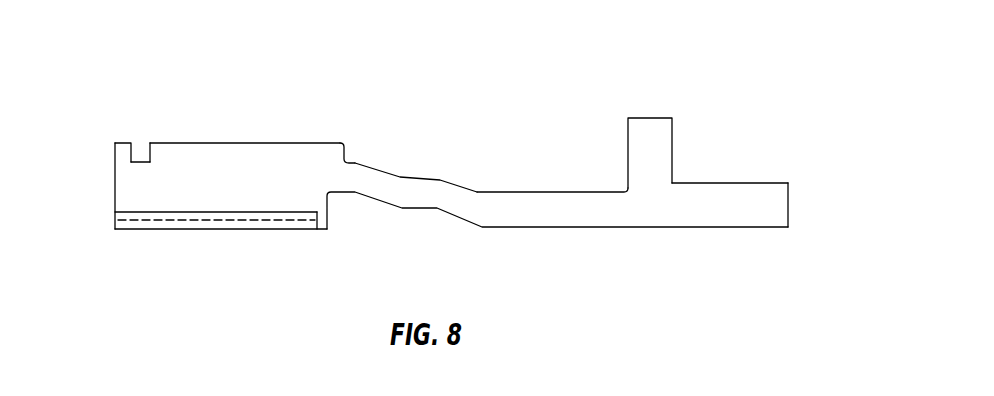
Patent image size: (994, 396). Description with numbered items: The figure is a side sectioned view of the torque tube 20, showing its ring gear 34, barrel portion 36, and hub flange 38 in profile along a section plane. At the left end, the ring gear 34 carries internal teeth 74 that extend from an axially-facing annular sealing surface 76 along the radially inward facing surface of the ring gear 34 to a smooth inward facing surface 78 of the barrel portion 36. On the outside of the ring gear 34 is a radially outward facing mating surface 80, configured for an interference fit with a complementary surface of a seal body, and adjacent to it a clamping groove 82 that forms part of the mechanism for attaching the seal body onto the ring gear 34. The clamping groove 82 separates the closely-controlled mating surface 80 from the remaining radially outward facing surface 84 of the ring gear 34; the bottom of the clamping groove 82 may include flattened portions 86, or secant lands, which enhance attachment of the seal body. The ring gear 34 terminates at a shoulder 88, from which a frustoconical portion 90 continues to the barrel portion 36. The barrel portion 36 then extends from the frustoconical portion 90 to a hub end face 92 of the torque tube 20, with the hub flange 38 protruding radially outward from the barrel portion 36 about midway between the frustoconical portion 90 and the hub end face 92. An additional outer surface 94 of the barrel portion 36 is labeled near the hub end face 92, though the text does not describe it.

The torque tube 20 is at (712, 111).
The ring gear 34 is at (238, 187).
The barrel portion 36 is at (514, 192).
The hub flange 38 is at (641, 118).
The internal teeth 74 is at (176, 218).
The axially-facing annular sealing surface 76 is at (114, 186).
The smooth inward facing surface 78 is at (316, 226).
The mating surface 80 is at (119, 143).
The clamping groove 82 is at (136, 150).
The radially outward facing surface 84 is at (252, 143).
The flattened portions 86 is at (150, 143).
The shoulder 88 is at (343, 143).
The frustoconical portion 90 is at (412, 184).
The hub end face 92 is at (789, 204).
The upper surface 94 is at (719, 183).